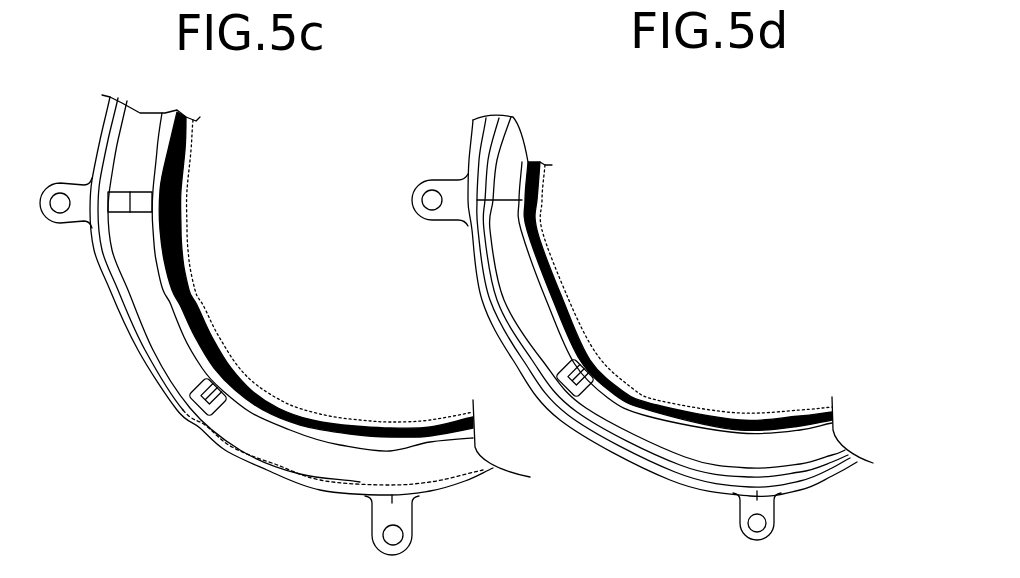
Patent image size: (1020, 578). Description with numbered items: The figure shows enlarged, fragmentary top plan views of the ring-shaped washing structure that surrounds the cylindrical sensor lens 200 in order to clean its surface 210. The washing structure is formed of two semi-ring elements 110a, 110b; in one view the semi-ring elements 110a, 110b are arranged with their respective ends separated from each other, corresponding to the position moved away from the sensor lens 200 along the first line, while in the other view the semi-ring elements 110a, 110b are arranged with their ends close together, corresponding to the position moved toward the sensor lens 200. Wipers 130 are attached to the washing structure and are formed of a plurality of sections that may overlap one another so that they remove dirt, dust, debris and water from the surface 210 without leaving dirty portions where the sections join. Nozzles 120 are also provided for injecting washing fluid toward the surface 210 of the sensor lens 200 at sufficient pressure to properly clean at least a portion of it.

In FIG. 5C, the semi-ring element 110a is at (137, 145).
In FIG. 5D, the semi-ring element 110a is at (513, 177).
In FIG. 5C, the semi-ring element 110b is at (287, 437).
In FIG. 5D, the semi-ring element 110b is at (771, 437).
In FIG. 5C, the nozzle 120 is at (193, 410).
In FIG. 5D, the nozzle 120 is at (583, 373).
In FIG. 5C, the wiper 130 is at (205, 362).
In FIG. 5D, the wiper 130 is at (683, 407).
In FIG. 5C, the sensor lens 200 is at (192, 301).
In FIG. 5D, the sensor lens 200 is at (567, 299).
In FIG. 5C, the surface 210 is at (160, 205).
In FIG. 5D, the surface 210 is at (542, 235).